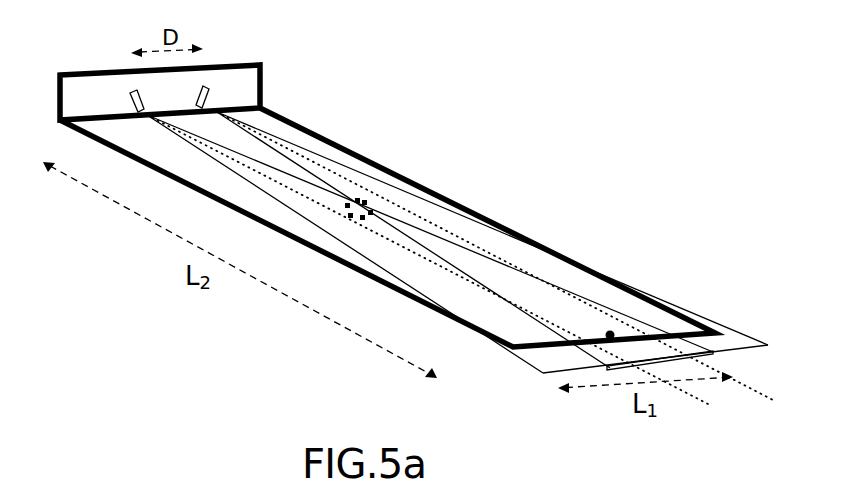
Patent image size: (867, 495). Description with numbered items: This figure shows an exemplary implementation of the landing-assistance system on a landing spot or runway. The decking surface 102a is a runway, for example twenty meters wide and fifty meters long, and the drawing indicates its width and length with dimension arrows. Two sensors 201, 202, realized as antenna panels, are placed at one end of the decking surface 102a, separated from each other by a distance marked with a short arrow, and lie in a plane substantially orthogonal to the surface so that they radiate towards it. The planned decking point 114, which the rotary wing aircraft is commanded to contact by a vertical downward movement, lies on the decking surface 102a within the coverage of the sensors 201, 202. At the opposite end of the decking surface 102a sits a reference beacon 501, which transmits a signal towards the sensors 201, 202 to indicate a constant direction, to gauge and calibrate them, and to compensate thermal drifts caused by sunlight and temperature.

The sensor 201 is at (131, 97).
The sensor 202 is at (209, 94).
The decking surface 102a is at (292, 132).
The decking point 114 is at (365, 203).
The reference beacon 501 is at (612, 333).